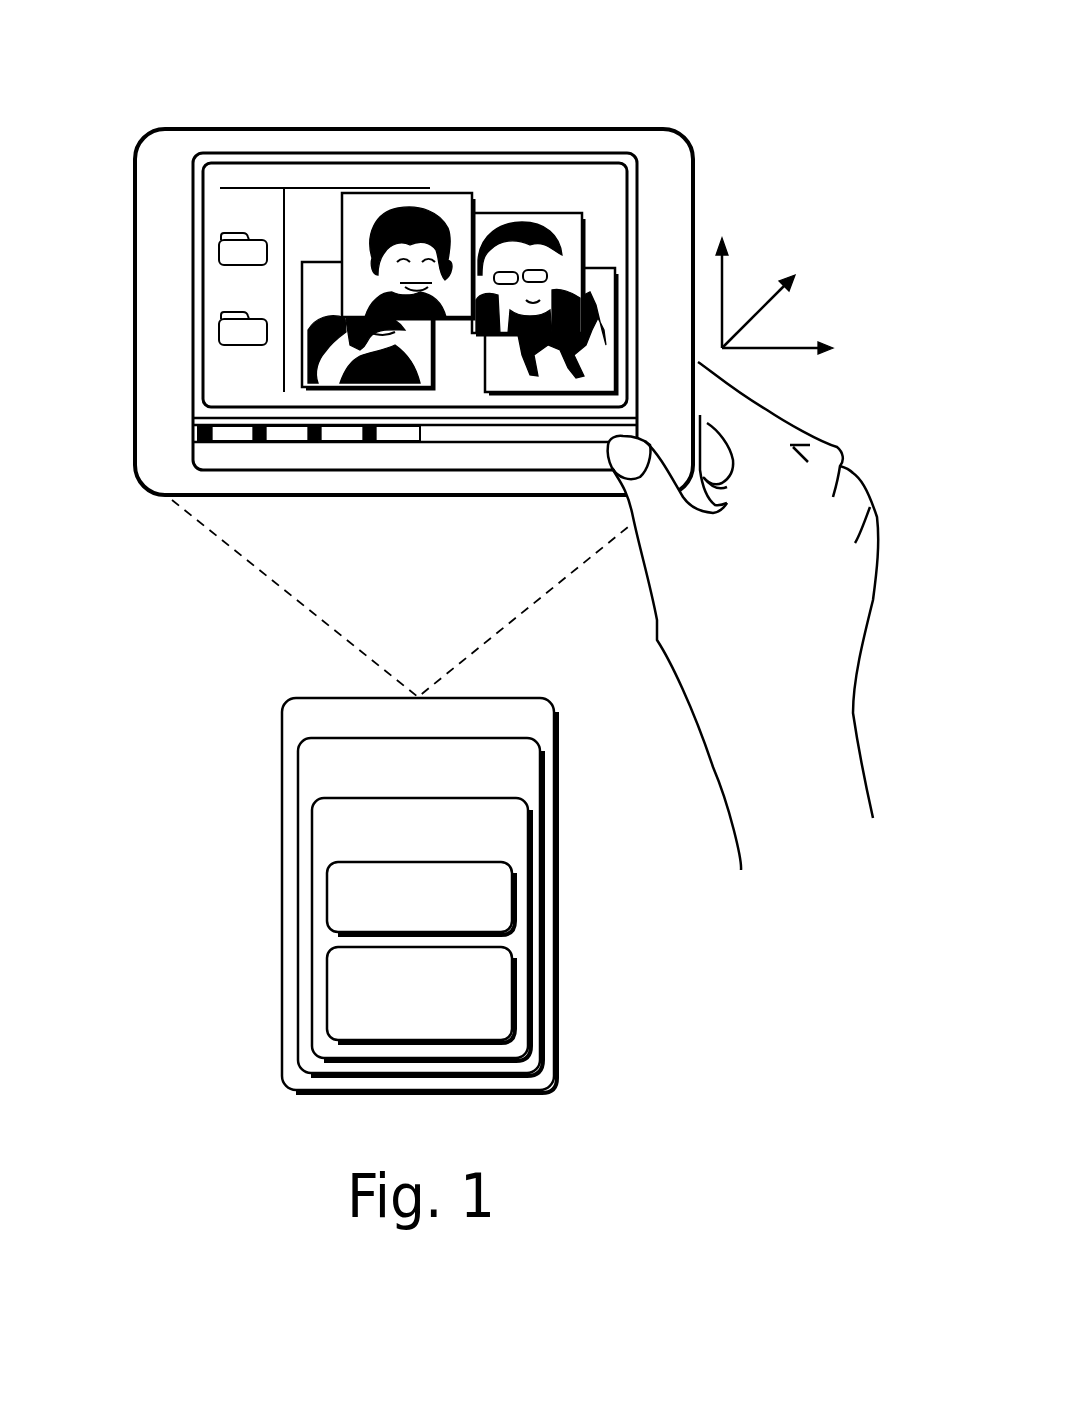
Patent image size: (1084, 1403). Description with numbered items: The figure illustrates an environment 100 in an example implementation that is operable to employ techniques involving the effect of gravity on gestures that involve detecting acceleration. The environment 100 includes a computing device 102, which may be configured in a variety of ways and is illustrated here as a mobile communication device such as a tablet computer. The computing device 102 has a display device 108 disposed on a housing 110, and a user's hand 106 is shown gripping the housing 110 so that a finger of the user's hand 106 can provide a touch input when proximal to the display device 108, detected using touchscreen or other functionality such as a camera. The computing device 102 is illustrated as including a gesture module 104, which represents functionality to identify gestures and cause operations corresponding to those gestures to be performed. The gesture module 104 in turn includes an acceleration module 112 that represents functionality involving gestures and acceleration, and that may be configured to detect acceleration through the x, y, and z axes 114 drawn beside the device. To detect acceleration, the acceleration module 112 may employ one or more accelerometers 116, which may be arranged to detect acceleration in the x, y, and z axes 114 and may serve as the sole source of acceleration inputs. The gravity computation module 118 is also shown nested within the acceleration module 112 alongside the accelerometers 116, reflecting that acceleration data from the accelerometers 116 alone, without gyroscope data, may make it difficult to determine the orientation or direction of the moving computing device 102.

The environment 100 is at (176, 66).
The computing device 102 is at (525, 728).
The gesture module 104 is at (473, 794).
The user's hand 106 is at (770, 616).
The display device 108 is at (610, 186).
The housing 110 is at (681, 316).
The acceleration module 112 is at (473, 854).
The x, y, and z axes 114 is at (774, 216).
The accelerometers 116 is at (435, 922).
The gravity computation module 118 is at (474, 1026).